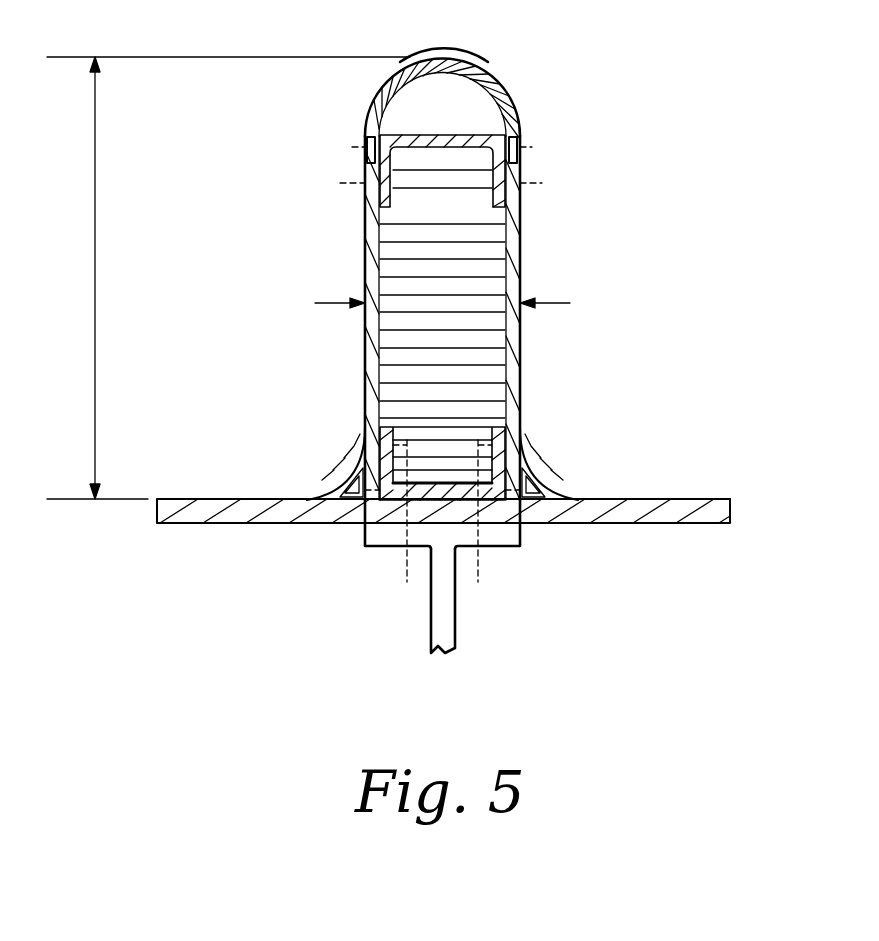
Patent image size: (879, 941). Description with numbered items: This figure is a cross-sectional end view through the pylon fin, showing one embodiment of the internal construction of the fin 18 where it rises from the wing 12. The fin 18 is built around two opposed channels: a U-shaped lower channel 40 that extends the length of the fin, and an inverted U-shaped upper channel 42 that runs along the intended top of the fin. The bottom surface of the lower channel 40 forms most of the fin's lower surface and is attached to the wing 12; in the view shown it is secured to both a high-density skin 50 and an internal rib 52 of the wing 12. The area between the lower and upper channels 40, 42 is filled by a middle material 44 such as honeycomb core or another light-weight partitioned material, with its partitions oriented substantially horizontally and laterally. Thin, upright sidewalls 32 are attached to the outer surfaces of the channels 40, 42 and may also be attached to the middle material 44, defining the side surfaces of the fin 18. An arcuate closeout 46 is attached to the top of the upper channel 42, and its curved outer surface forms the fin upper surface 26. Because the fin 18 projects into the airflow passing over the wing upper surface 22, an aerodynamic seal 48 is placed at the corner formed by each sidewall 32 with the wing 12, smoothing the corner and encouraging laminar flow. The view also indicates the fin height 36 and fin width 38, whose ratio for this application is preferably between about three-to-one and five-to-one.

The supersonic wing 12 is at (222, 499).
The fin 18 is at (617, 161).
The wing upper surface 22 is at (678, 499).
The fin upper surface 26 is at (430, 57).
The sidewalls 32 is at (370, 245).
The fin height 36 is at (228, 278).
The fin width 38 is at (457, 310).
The lower channel 40 is at (497, 460).
The upper channel 42 is at (437, 140).
The middle material 44 is at (478, 243).
The arcuate closeout 46 is at (508, 85).
The aerodynamic seal 48 is at (343, 459).
The high-density skin 50 is at (522, 540).
The internal rib 52 is at (443, 608).